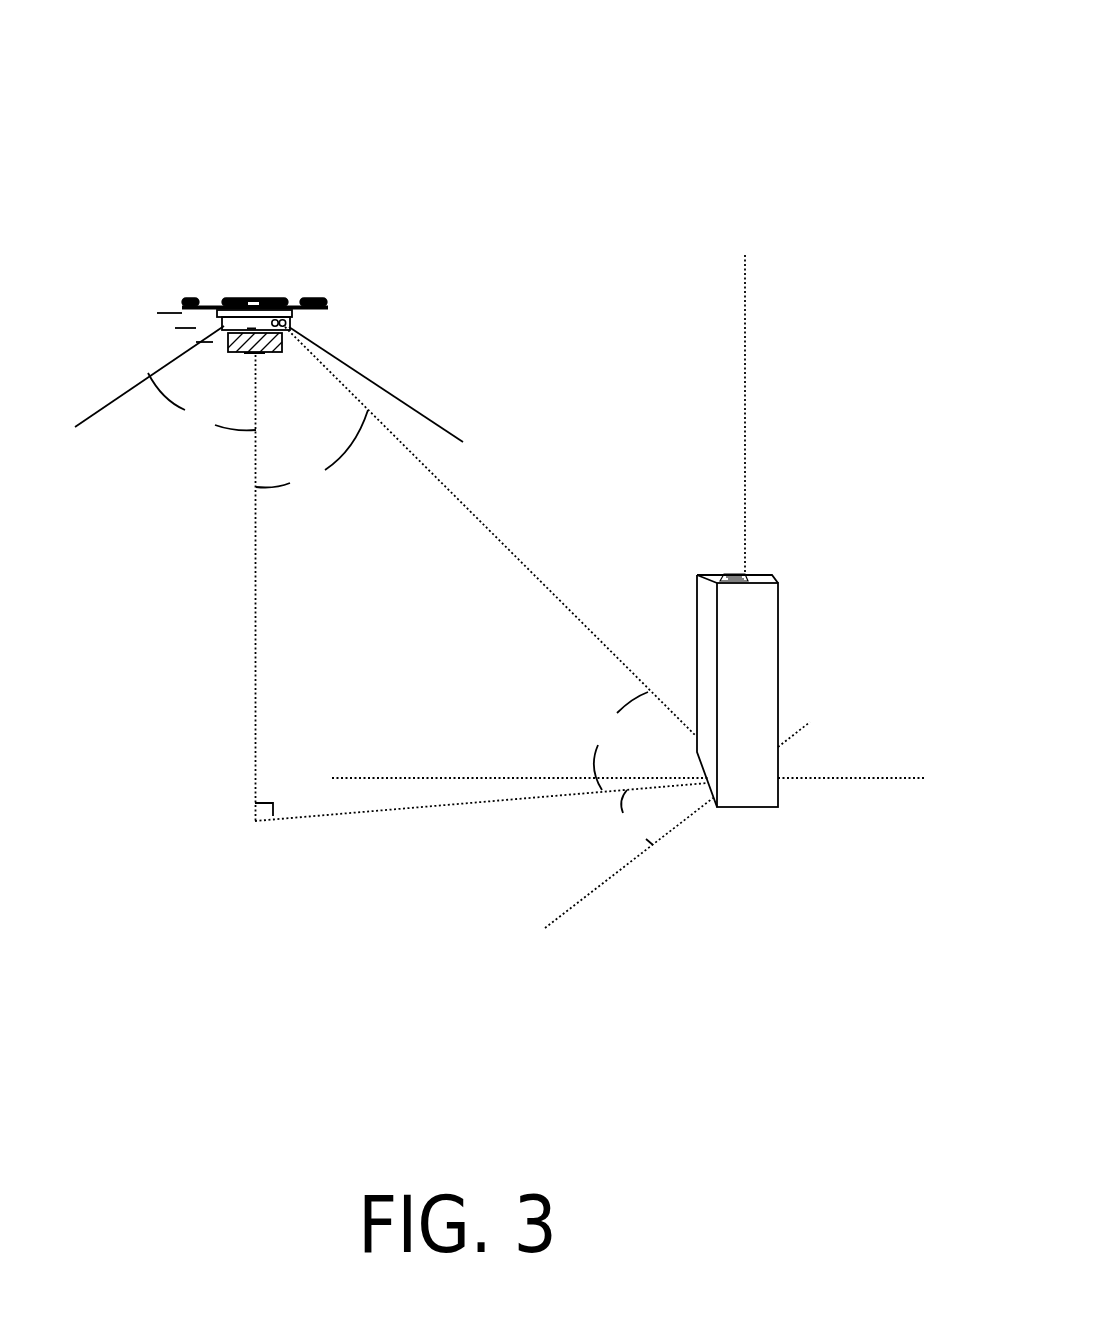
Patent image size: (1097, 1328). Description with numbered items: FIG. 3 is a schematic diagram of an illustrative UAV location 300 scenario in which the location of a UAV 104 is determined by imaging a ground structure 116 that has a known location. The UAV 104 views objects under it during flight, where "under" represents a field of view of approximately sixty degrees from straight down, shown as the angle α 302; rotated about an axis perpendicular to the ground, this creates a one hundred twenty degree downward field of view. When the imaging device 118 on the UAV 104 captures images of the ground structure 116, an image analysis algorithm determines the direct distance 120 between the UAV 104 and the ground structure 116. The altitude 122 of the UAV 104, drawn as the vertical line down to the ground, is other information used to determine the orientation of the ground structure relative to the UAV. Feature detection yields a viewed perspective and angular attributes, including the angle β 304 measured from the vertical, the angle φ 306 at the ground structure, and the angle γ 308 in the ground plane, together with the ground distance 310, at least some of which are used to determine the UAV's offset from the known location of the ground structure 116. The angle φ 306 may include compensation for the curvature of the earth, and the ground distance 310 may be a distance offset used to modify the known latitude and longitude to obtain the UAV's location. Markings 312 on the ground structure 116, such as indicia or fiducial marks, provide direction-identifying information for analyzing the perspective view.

The UAV location 300 is at (694, 24).
The UAV 104 is at (328, 303).
The imaging device 118 is at (290, 326).
The angle α 302 is at (192, 426).
The angle β 304 is at (307, 497).
The distance 120 is at (517, 560).
The altitude 122 is at (255, 673).
The markings 312 is at (745, 573).
The ground structure 116 is at (780, 612).
The angle φ 306 is at (590, 723).
The ground distance 310 is at (373, 813).
The angle γ 308 is at (623, 833).